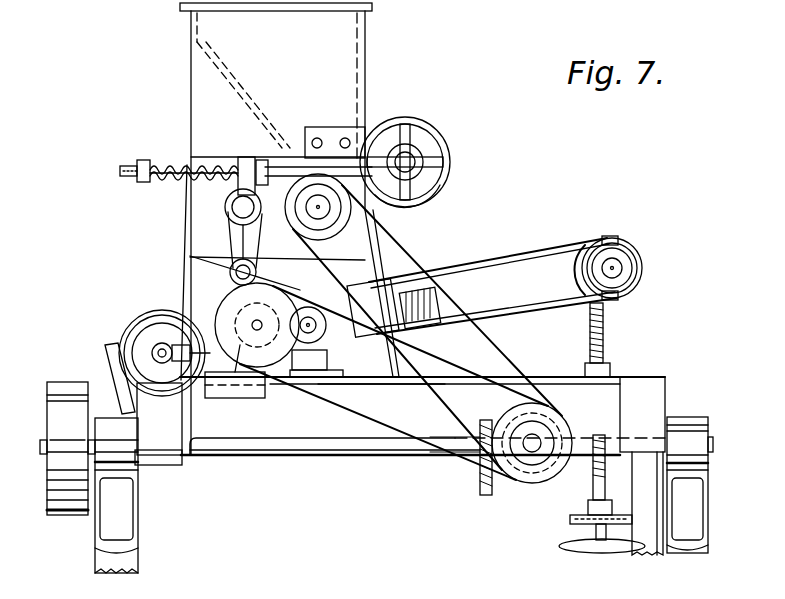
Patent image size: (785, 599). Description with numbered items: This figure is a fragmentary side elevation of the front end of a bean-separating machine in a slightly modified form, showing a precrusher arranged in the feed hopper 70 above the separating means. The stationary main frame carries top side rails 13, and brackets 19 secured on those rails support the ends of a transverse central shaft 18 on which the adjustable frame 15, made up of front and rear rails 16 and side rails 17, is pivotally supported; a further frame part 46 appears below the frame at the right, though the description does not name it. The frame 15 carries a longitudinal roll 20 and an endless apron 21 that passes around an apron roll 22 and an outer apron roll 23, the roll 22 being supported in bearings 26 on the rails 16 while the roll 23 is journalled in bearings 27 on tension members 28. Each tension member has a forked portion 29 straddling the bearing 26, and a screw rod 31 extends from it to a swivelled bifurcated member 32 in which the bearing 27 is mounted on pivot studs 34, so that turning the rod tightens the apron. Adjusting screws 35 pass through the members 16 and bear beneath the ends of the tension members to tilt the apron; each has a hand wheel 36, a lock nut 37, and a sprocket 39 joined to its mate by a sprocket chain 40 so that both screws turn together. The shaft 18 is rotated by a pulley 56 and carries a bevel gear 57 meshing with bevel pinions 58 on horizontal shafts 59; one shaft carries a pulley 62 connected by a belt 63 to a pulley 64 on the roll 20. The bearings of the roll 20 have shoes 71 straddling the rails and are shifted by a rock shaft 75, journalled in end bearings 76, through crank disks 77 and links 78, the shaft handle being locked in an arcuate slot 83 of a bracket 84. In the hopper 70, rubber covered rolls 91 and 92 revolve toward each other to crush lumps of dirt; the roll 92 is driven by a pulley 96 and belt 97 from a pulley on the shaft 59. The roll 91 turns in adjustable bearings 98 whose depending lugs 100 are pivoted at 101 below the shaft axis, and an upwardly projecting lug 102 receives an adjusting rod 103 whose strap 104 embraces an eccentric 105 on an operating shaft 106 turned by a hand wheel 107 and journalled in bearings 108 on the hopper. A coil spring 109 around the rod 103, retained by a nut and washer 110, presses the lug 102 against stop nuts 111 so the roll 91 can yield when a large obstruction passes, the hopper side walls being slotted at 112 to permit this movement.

The top side rails 13 is at (136, 558).
The adjustable frame 15 is at (473, 403).
The front and rear rails 16 is at (422, 402).
The side rails 17 is at (642, 414).
The transverse central shaft 18 is at (285, 456).
The brackets 19 is at (404, 495).
The roll 20 is at (240, 398).
The endless apron 21 is at (498, 262).
The apron roll 22 is at (342, 348).
The apron roll 23 is at (642, 260).
The bearings 26 is at (328, 386).
The bearings 27 is at (622, 280).
The tension members 28 is at (509, 300).
The forked portions 29 is at (372, 286).
The screw rod 31 is at (458, 276).
The bifurcated member 32 is at (566, 255).
The pivot studs 34 is at (618, 240).
The adjusting screws 35 is at (605, 350).
The hand wheel 36 is at (601, 548).
The lock nut 37 is at (586, 372).
The sprocket 39 is at (570, 519).
The sprocket chain 40 is at (590, 505).
The leg 46 is at (647, 503).
The pulley 56 is at (55, 398).
The bevel gear 57 is at (480, 485).
The bevel pinions 58 is at (528, 478).
The horizontal shafts 59 is at (528, 448).
The pulley 62 is at (552, 420).
The belt 63 is at (395, 410).
The pulley 64 is at (232, 303).
The hopper 70 is at (277, 273).
The shoe 71 is at (215, 398).
The rock shaft 75 is at (158, 348).
The end bearings 76 is at (158, 376).
The crank disk 77 is at (151, 343).
The link 78 is at (188, 385).
The arcuate slot 83 is at (135, 330).
The bracket 84 is at (124, 348).
The rubber covered roll 91 is at (200, 195).
The rubber covered roll 92 is at (355, 232).
The pulley 96 is at (395, 224).
The belt 97 is at (451, 341).
The adjustable bearings 98 is at (225, 208).
The depending lugs 100 is at (228, 232).
The pivot 101 is at (232, 270).
The upwardly projecting lug 102 is at (238, 160).
The adjusting rod 103 is at (283, 172).
The strap 104 is at (447, 172).
The eccentric 105 is at (425, 156).
The operating shaft 106 is at (410, 156).
The hand wheel 107 is at (402, 126).
The bearings 108 is at (378, 145).
The coil spring 109 is at (178, 162).
The nut and washer 110 is at (135, 183).
The nuts 111 is at (264, 162).
The slots 112 is at (260, 222).